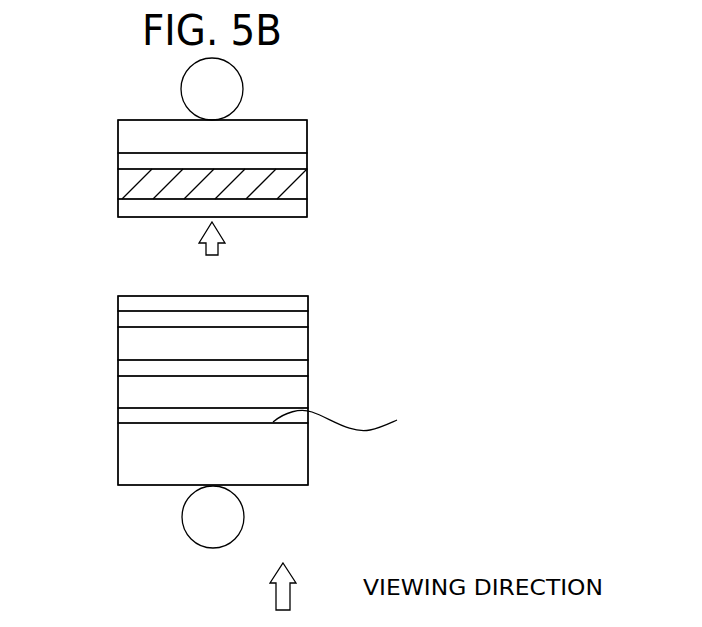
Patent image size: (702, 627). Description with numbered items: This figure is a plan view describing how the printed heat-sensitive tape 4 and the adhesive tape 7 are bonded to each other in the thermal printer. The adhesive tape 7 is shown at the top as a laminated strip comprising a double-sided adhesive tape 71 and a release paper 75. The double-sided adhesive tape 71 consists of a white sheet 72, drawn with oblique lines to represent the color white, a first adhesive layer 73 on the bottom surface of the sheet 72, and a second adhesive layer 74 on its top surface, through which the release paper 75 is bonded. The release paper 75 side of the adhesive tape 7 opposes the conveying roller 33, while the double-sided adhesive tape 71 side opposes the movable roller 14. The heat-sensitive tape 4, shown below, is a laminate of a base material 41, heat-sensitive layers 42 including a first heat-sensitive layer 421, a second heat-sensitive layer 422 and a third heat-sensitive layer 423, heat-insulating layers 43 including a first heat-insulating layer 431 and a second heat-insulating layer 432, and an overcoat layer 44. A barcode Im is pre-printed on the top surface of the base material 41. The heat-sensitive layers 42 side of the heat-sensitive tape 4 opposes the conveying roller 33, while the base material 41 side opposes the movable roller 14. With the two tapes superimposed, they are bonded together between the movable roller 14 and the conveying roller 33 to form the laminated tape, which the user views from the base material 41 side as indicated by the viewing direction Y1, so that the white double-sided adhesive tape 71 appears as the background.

The adhesive tape 7 is at (143, 120).
The conveying roller 33 is at (243, 88).
The release paper 75 is at (126, 142).
The second adhesive layer 74 is at (300, 160).
The sheet 72 is at (300, 182).
The first adhesive layer 73 is at (300, 208).
The double-sided adhesive tape 71 is at (356, 128).
The heat-sensitive tape 4 is at (138, 487).
The overcoat layer 44 is at (298, 303).
The third heat-sensitive layer 423 is at (125, 323).
The second heat-insulating layer 432 is at (298, 342).
The second heat-sensitive layer 422 is at (125, 370).
The first heat-insulating layer 431 is at (298, 388).
The first heat-sensitive layer 421 is at (125, 416).
The heat-sensitive layers 42 is at (52, 305).
The heat-insulating layers 43 is at (374, 322).
The barcode Im is at (354, 419).
The base material 41 is at (302, 452).
The movable roller 14 is at (245, 515).
The viewing direction Y1 is at (292, 595).